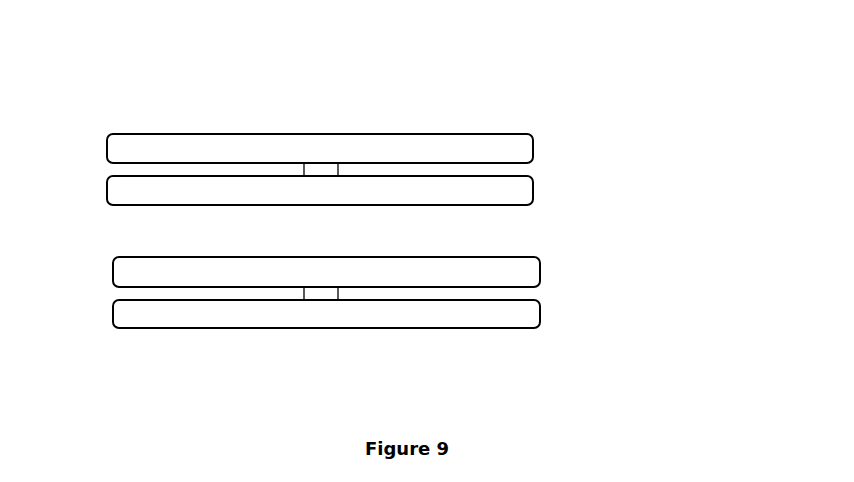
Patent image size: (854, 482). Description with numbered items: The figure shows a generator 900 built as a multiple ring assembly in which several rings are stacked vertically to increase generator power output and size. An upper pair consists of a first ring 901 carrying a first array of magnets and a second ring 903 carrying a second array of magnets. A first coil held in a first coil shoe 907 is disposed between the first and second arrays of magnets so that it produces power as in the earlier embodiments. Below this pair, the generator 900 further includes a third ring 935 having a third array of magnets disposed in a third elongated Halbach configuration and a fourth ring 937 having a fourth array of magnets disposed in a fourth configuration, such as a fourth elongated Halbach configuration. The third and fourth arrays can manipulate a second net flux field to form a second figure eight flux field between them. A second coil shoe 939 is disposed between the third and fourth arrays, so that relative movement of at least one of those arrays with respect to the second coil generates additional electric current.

The generator 900 is at (132, 77).
The first ring 901 is at (470, 132).
The second ring 903 is at (537, 187).
The first coil shoe 907 is at (320, 164).
The third ring 935 is at (540, 260).
The fourth ring 937 is at (540, 313).
The second coil shoe 939 is at (322, 300).